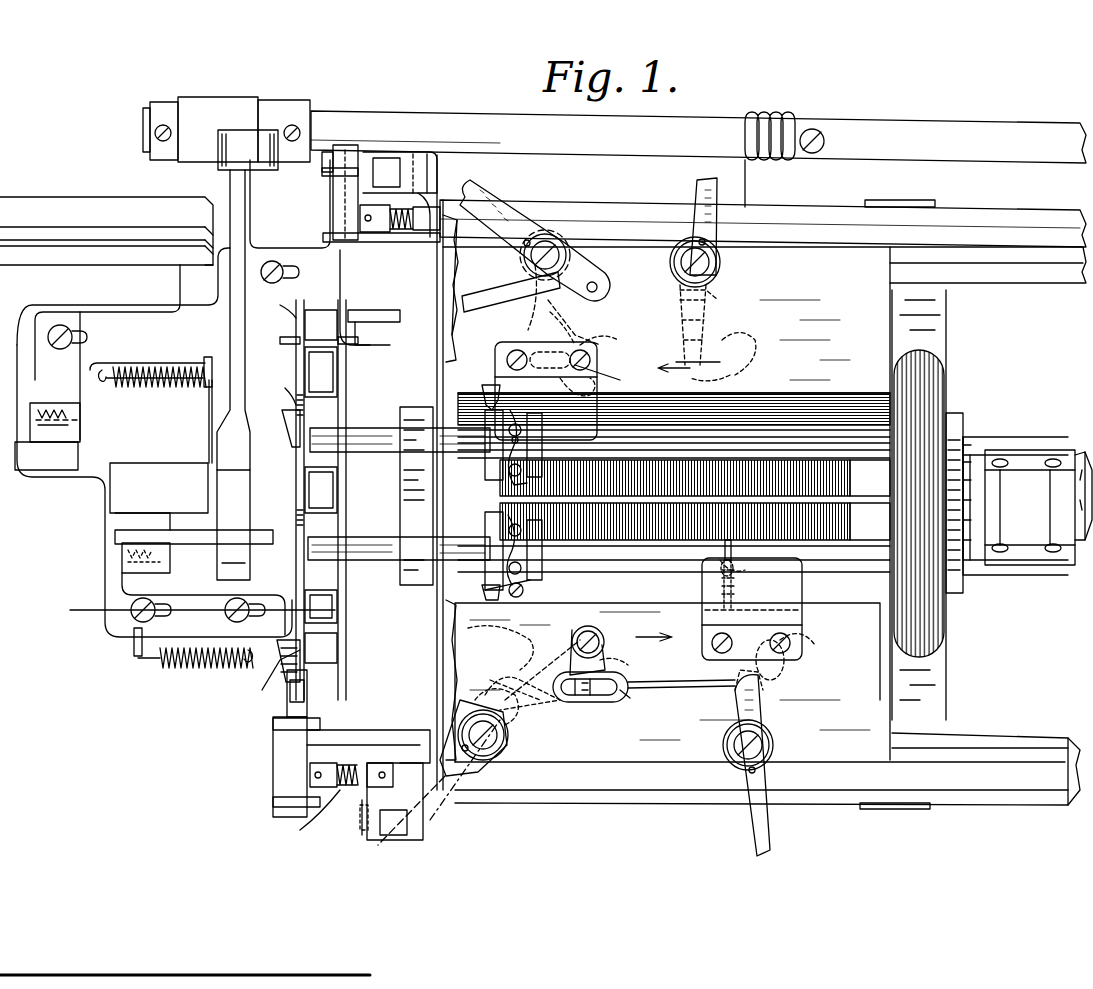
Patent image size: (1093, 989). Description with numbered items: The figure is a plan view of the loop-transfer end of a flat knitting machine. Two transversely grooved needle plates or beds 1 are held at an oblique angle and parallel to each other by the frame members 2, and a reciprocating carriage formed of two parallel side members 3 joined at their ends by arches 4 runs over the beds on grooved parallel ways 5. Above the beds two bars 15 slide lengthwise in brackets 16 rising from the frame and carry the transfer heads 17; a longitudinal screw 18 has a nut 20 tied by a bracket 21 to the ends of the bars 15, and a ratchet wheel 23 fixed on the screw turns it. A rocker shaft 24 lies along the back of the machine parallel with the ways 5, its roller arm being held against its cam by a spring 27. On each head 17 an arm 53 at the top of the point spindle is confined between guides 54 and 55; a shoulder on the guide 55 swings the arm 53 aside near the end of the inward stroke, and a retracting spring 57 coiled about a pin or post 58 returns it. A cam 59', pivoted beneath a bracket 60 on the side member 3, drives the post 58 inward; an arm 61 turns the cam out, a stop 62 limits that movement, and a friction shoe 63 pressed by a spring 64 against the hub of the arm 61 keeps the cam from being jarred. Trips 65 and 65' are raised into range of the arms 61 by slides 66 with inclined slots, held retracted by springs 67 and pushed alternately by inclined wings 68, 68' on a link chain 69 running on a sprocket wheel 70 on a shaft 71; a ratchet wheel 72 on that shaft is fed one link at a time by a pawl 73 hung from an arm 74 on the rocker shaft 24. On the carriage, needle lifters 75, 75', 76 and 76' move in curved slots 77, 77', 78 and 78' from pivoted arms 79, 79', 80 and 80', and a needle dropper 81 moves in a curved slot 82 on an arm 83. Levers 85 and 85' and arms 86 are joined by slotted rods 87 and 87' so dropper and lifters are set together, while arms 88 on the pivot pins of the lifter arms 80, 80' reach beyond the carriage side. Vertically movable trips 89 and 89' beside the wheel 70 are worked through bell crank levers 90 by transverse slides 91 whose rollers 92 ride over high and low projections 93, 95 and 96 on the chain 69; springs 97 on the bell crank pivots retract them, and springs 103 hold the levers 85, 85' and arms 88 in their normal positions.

The needle plates or beds 1 is at (870, 500).
The frame members 2 is at (434, 364).
The side members 3 is at (783, 505).
The arches 4 is at (919, 505).
The grooved parallel ways 5 is at (499, 502).
The bars 15 is at (674, 497).
The bracket 16 is at (419, 404).
The transfer head or block 17 is at (399, 494).
The longitudinal screw 18 is at (1085, 460).
The nut 20 is at (1040, 512).
The bracket 21 is at (1019, 506).
The ratchet wheel 23 is at (95, 611).
The rocker shaft 24 is at (698, 137).
The spring 27 is at (748, 142).
The arm 53 is at (505, 482).
The guide 54 is at (484, 448).
The guide 55 is at (543, 447).
The retracting spring 57 is at (494, 586).
The pin or post 58 is at (507, 420).
The cam 59' is at (675, 474).
The bracket 60 is at (648, 501).
The arm 61 is at (720, 556).
The stop 62 is at (598, 393).
The friction shoe 63 is at (735, 594).
The spring 64 is at (718, 608).
The trip 65 is at (196, 525).
The trip 65' is at (92, 488).
The slide 66 is at (173, 398).
The spring 67 is at (138, 388).
The inclined wing 68 is at (307, 509).
The lever 68' is at (690, 269).
The link belt or chain 69 is at (340, 404).
The sprocket or chain wheel 70 is at (333, 498).
The shaft 71 is at (110, 493).
The ratchet wheel 72 is at (210, 428).
The pawl 73 is at (229, 329).
The arm 74 is at (275, 170).
The needle lifter 75 is at (773, 663).
The needle lifter 75' is at (612, 333).
The needle lifter 76 is at (532, 675).
The needle lifter 76' is at (689, 375).
The curved slot 77 is at (807, 646).
The curved slot 77' is at (554, 328).
The curved slot 78 is at (500, 637).
The curved slot 78' is at (730, 364).
The arm 79 is at (734, 673).
The arm 79' is at (576, 305).
The arm 80 is at (506, 687).
The arm 80' is at (737, 340).
The needle dropper 81 is at (588, 702).
The curved slot 82 is at (626, 692).
The arm 83 is at (614, 661).
The lever 85 is at (768, 765).
The lever 85' is at (535, 237).
The arm 86 is at (572, 660).
The slotted rod 87 is at (681, 669).
The slotted rod 87' is at (511, 289).
The arm 88 is at (442, 772).
The trip 89 is at (430, 780).
The trip 89' is at (400, 180).
The bell crank lever 90 is at (345, 805).
The slide 91 is at (353, 225).
The roller 92 is at (308, 697).
The inclined wing or projection 93 is at (372, 316).
The projection 95 is at (296, 322).
The projection 96 is at (296, 496).
The spring 97 is at (402, 232).
The spring 103 is at (524, 268).